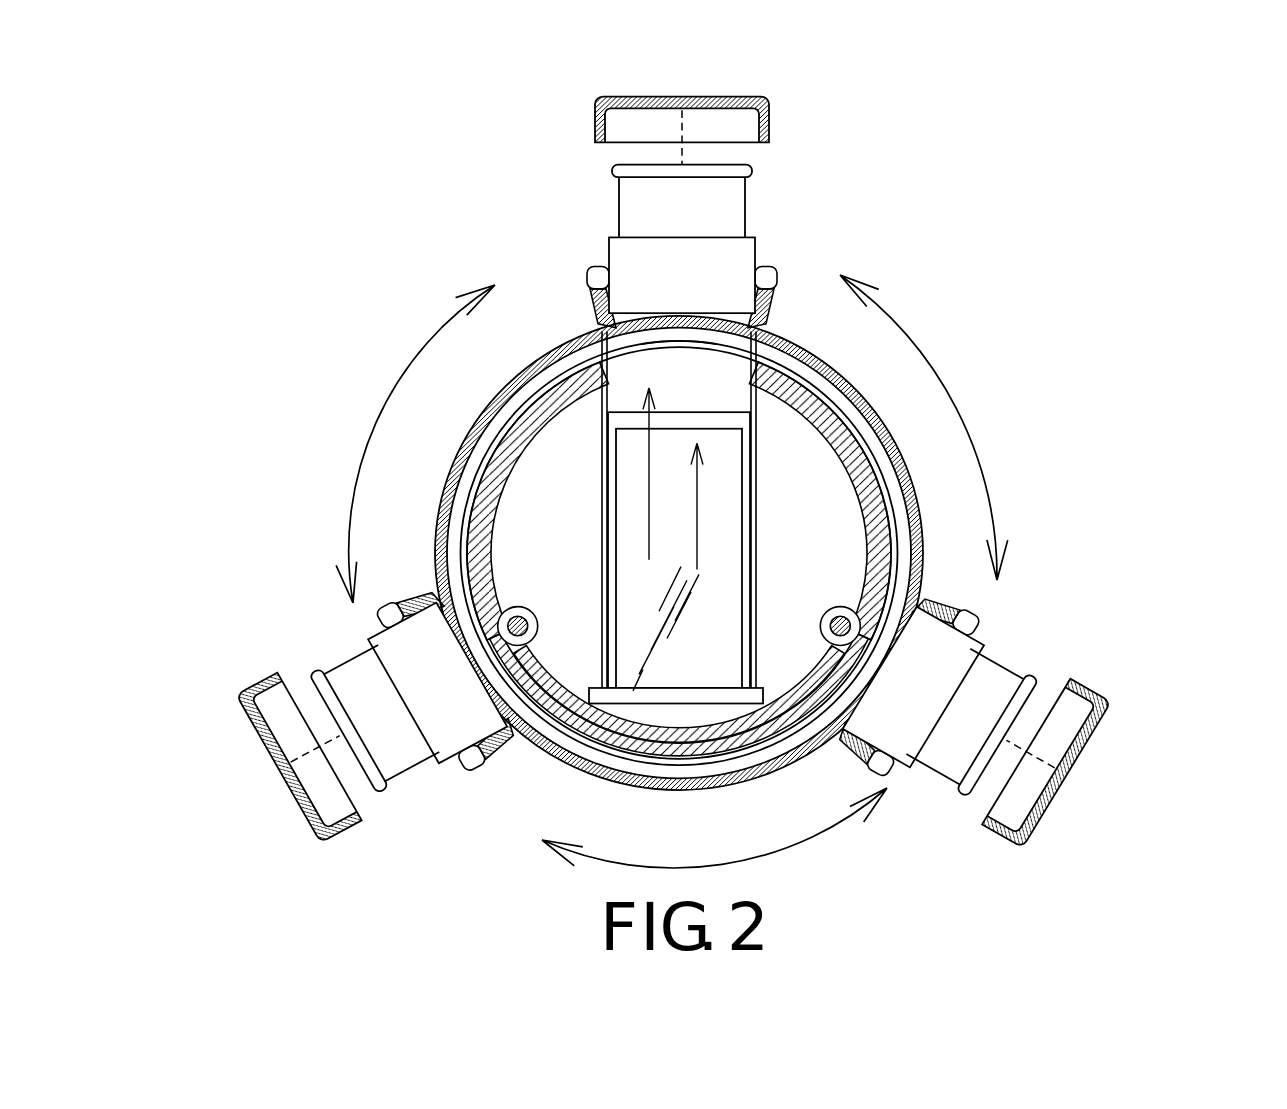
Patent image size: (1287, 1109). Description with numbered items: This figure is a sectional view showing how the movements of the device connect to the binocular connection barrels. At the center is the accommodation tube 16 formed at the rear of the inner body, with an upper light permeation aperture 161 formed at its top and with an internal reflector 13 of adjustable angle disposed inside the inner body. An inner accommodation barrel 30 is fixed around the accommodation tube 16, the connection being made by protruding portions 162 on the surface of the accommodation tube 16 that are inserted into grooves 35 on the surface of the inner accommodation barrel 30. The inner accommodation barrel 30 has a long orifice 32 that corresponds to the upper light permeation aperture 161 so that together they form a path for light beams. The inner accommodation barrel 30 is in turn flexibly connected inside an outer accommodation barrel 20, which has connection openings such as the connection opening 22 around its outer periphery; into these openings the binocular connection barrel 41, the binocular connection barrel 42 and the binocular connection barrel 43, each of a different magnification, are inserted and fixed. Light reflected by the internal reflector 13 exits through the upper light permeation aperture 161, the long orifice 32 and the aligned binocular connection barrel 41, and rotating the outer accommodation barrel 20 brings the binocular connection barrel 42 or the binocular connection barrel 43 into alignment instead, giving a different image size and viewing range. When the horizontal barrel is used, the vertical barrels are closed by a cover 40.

The internal reflector 13 is at (640, 673).
The accommodation tube 16 is at (503, 497).
The upper light permeation aperture 161 is at (653, 367).
The protruding portions 162 is at (520, 616).
The outer accommodation barrel 20 is at (812, 380).
The connection opening 22 is at (733, 320).
The inner accommodation barrel 30 is at (520, 427).
The long orifice 32 is at (667, 350).
The grooves 35 is at (432, 648).
The cover 40 is at (772, 113).
The binocular connection barrel 41 is at (373, 713).
The binocular connection barrel 42 is at (663, 243).
The binocular connection barrel 43 is at (982, 717).